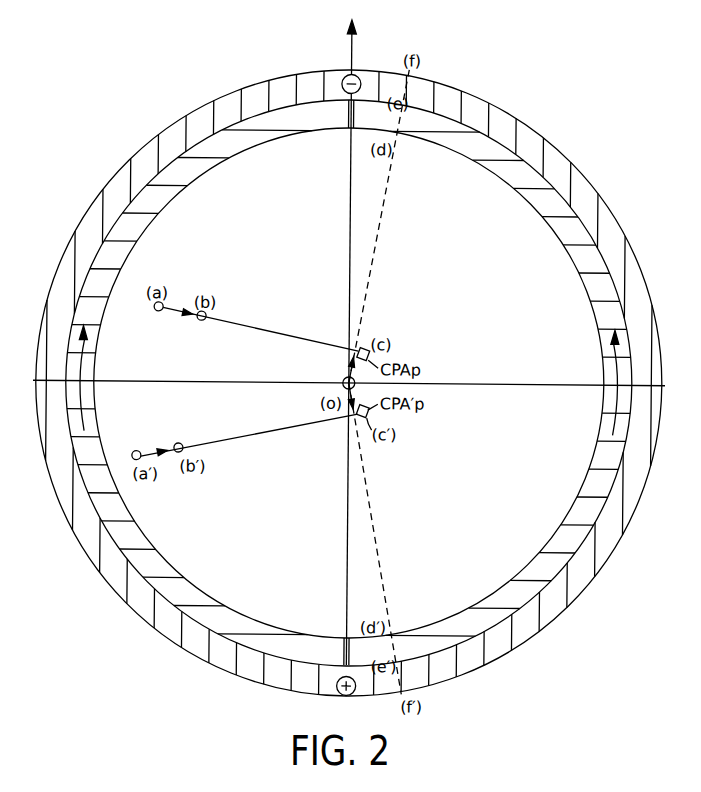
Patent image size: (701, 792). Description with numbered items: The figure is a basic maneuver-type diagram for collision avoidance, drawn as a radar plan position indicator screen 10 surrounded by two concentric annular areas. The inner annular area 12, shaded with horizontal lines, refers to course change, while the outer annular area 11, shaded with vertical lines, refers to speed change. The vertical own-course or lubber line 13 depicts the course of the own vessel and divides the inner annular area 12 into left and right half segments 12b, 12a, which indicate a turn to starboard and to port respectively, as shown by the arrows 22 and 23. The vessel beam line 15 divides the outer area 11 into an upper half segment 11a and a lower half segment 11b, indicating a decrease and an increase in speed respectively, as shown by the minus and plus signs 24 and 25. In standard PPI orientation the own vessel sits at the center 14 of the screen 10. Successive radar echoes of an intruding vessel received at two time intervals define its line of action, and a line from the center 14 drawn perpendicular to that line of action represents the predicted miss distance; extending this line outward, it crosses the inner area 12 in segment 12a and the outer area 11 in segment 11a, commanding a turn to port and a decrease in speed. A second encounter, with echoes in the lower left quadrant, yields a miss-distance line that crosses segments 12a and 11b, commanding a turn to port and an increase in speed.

The radar plan position indicator screen 10 is at (464, 224).
The outer annular area 11 is at (348, 382).
The upper half segment of outer annular area 11a is at (536, 131).
The lower half segment of outer annular area 11b is at (498, 659).
The inner annular area 12 is at (349, 383).
The right half segment of inner annular area 12a is at (603, 351).
The left half segment of inner annular area 12b is at (97, 346).
The lubber line 13 is at (349, 46).
The center of the screen 14 is at (344, 378).
The vessel beam line 15 is at (203, 383).
The arrow 22 is at (81, 398).
The arrow 23 is at (616, 406).
The minus sign 24 is at (346, 75).
The plus sign 25 is at (339, 692).